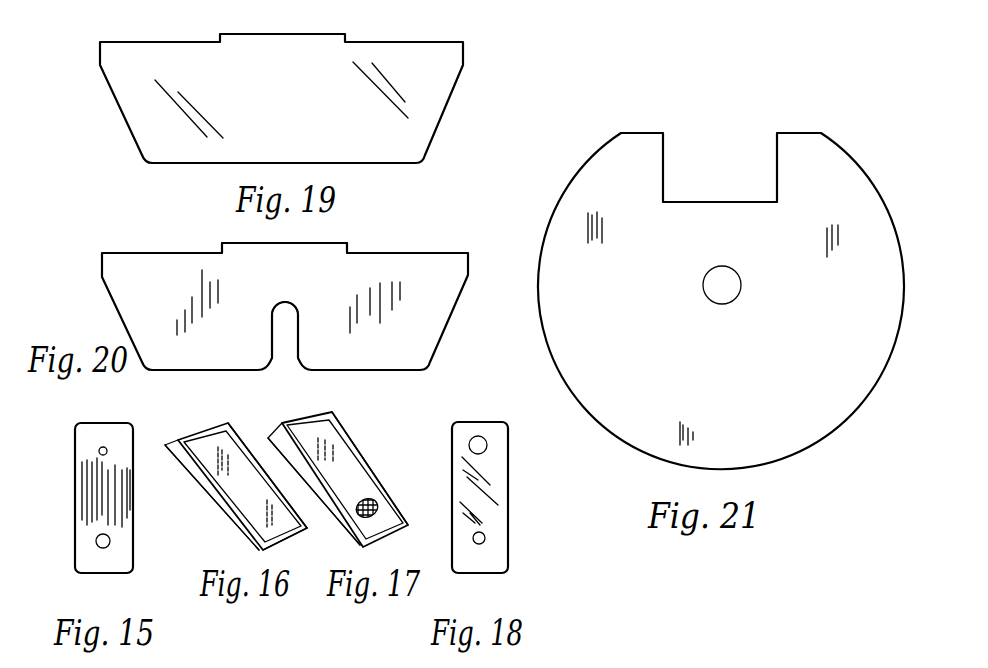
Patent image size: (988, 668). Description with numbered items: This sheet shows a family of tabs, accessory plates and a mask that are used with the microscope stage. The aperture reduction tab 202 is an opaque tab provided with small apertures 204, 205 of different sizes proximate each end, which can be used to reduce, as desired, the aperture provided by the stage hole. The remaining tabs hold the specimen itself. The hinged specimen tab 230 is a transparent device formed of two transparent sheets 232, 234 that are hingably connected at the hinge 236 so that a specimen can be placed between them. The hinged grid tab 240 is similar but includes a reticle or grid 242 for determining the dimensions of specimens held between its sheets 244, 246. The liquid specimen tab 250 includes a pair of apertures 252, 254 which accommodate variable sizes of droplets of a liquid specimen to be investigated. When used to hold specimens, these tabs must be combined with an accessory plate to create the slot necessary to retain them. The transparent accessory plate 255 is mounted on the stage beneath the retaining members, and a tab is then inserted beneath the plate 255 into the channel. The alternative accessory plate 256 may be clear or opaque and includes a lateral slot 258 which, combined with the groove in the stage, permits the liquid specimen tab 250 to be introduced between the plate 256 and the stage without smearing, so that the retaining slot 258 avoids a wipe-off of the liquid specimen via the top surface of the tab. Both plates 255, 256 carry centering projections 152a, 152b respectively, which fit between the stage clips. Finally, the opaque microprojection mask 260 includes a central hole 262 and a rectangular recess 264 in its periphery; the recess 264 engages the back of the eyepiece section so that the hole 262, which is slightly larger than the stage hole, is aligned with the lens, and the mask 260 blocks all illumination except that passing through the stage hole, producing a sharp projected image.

In FIG. 19, the centering projection 152a is at (303, 32).
In FIG. 20, the centering projection 152b is at (313, 242).
In FIG. 19, the transparent accessory plate 255 is at (465, 48).
In FIG. 20, the alternative accessory plate 256 is at (440, 252).
In FIG. 20, the lateral slot 258 is at (292, 300).
In FIG. 15, the aperture reduction tab 202 is at (75, 502).
In FIG. 15, the aperture 204 is at (98, 450).
In FIG. 15, the aperture 205 is at (95, 542).
In FIG. 16, the hinged specimen tab 230 is at (210, 420).
In FIG. 16, the transparent sheet 232 is at (180, 465).
In FIG. 16, the transparent sheet 234 is at (233, 423).
In FIG. 16, the hinge connection 236 is at (283, 540).
In FIG. 17, the hinged grid tab 240 is at (362, 439).
In FIG. 17, the reticle or grid 242 is at (368, 502).
In FIG. 17, the sheet 244 is at (272, 433).
In FIG. 17, the sheet 246 is at (337, 413).
In FIG. 18, the liquid specimen tab 250 is at (508, 472).
In FIG. 18, the aperture 252 is at (479, 433).
In FIG. 18, the aperture 254 is at (485, 538).
In FIG. 21, the microprojection mask 260 is at (835, 430).
In FIG. 21, the central hole 262 is at (735, 263).
In FIG. 21, the rectangular recess 264 is at (777, 162).